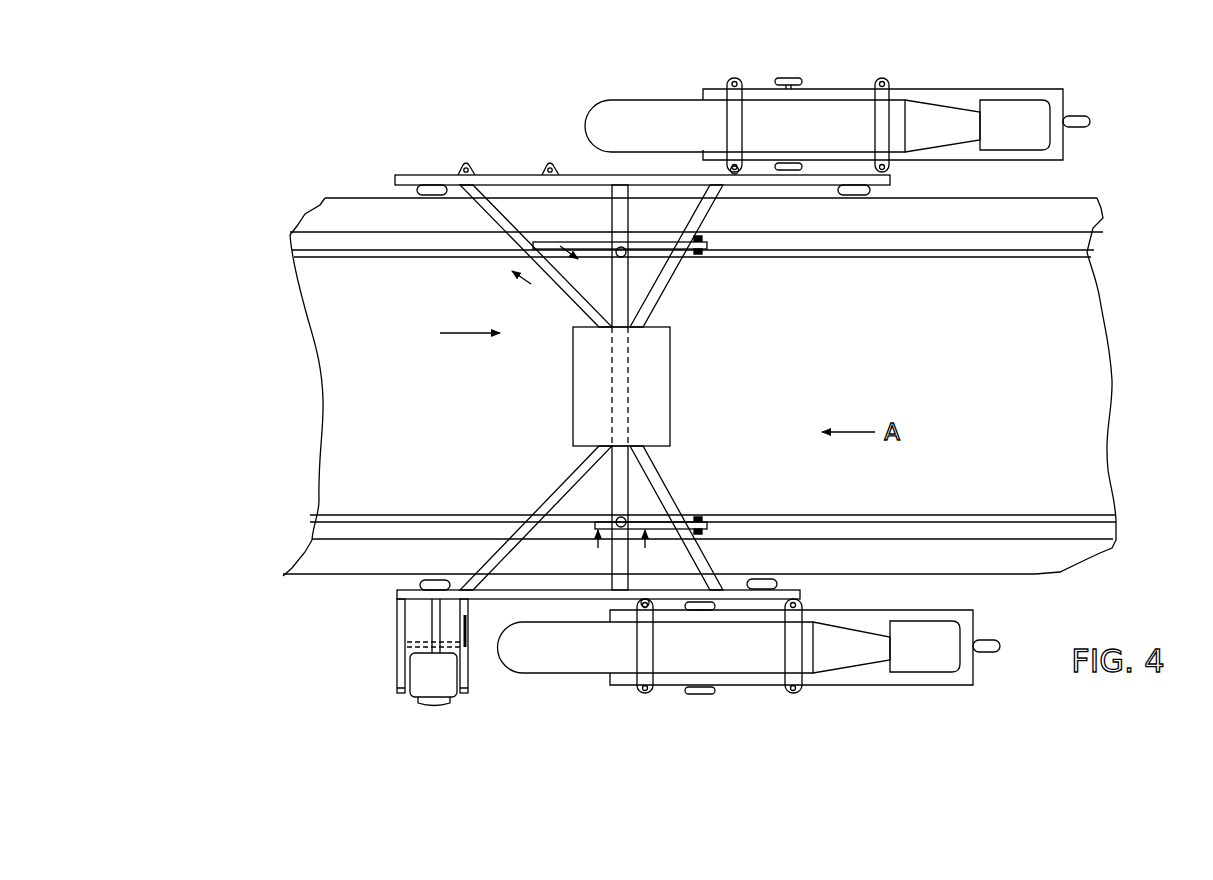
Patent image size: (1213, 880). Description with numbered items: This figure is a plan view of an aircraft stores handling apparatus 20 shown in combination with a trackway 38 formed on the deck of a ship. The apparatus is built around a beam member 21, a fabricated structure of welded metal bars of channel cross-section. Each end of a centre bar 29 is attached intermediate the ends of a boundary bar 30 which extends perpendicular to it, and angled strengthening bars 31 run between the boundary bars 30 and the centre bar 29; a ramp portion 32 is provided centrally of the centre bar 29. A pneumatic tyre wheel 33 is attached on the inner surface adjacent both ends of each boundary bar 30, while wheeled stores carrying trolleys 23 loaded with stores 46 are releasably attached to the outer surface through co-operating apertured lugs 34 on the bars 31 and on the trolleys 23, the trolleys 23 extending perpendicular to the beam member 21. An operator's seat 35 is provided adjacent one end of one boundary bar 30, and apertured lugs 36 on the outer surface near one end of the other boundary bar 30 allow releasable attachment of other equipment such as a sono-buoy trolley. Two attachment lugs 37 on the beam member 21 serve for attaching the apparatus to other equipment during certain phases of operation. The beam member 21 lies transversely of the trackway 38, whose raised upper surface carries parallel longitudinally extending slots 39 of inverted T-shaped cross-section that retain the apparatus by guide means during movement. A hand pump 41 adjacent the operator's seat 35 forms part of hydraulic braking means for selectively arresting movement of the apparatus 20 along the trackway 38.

The aircraft stores handling apparatus 20 is at (554, 120).
The beam member 21 is at (405, 346).
The stores carrying trolley 23 is at (794, 390).
The centre bar 29 is at (618, 472).
The boundary bar 30 is at (432, 175).
The angled strengthening bar 31 is at (590, 313).
The ramp portion 32 is at (671, 385).
The pneumatic tyre wheel 33 is at (420, 192).
The apertured lug 34 is at (727, 172).
The operator's seat 35 is at (425, 690).
The apertured lug 36 is at (548, 164).
The attachment lug 37 is at (703, 246).
The trackway 38 is at (900, 385).
The slot 39 is at (1060, 254).
The hand pump 41 is at (463, 615).
The stores 46 is at (776, 139).